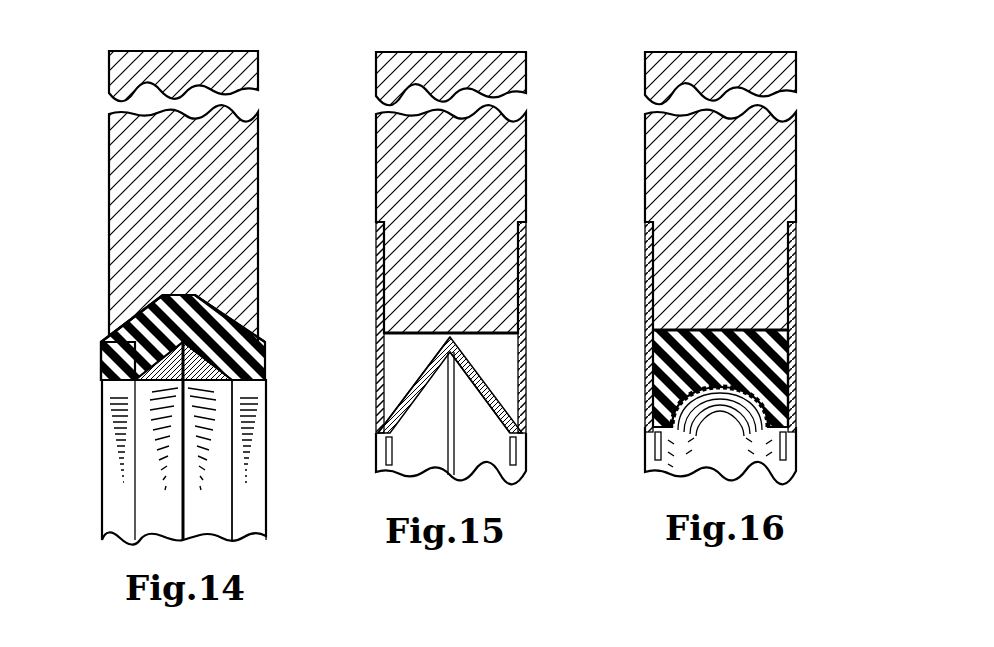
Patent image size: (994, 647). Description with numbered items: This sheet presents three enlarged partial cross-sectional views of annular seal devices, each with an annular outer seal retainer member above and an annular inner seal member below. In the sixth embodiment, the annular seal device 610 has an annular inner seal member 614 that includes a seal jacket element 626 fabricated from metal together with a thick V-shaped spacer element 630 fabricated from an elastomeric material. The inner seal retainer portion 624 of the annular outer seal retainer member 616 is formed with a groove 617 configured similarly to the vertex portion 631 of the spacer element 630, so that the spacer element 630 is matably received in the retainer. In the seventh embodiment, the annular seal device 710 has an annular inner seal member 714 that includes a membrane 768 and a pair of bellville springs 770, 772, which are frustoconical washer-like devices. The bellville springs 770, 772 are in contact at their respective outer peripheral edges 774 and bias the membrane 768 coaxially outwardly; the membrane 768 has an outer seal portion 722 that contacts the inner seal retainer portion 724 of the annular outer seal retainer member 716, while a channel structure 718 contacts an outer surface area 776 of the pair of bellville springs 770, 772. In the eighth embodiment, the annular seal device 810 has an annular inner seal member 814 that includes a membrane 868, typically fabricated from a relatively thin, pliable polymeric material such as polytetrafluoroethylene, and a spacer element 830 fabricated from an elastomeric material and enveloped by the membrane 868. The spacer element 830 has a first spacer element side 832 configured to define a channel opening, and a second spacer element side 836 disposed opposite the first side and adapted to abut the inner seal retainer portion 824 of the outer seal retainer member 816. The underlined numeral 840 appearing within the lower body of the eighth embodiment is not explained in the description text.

In FIG. 14, the annular seal device 610 is at (245, 40).
In FIG. 14, the annular inner seal member 614 is at (102, 435).
In FIG. 14, the annular outer seal retainer member 616 is at (258, 192).
In FIG. 14, the groove 617 is at (112, 322).
In FIG. 14, the inner seal retainer portion 624 is at (255, 322).
In FIG. 14, the seal jacket element 626 is at (258, 447).
In FIG. 14, the spacer element 630 is at (125, 362).
In FIG. 14, the vertex portion 631 is at (200, 314).
In FIG. 15, the annular seal device 710 is at (543, 103).
In FIG. 15, the annular inner seal member 714 is at (527, 330).
In FIG. 15, the annular outer seal retainer member 716 is at (376, 140).
In FIG. 15, the channel structure 718 is at (398, 430).
In FIG. 15, the outer seal portion 722 is at (380, 275).
In FIG. 15, the inner seal retainer portion 724 is at (410, 250).
In FIG. 15, the membrane 768 is at (524, 425).
In FIG. 15, the bellville spring 770 is at (410, 385).
In FIG. 15, the bellville spring 772 is at (490, 380).
In FIG. 15, the outer peripheral edges 774 is at (440, 330).
In FIG. 15, the outer surface area 776 is at (402, 406).
In FIG. 16, the annular seal device 810 is at (772, 40).
In FIG. 16, the annular inner seal member 814 is at (797, 330).
In FIG. 16, the outer seal retainer member 816 is at (645, 140).
In FIG. 16, the inner seal retainer portion 824 is at (660, 392).
In FIG. 16, the spacer element 830 is at (662, 411).
In FIG. 16, the first spacer element side 832 is at (665, 440).
In FIG. 16, the second spacer element side 836 is at (797, 268).
In FIG. 16, the dome 840 is at (746, 460).
In FIG. 16, the membrane 868 is at (797, 405).